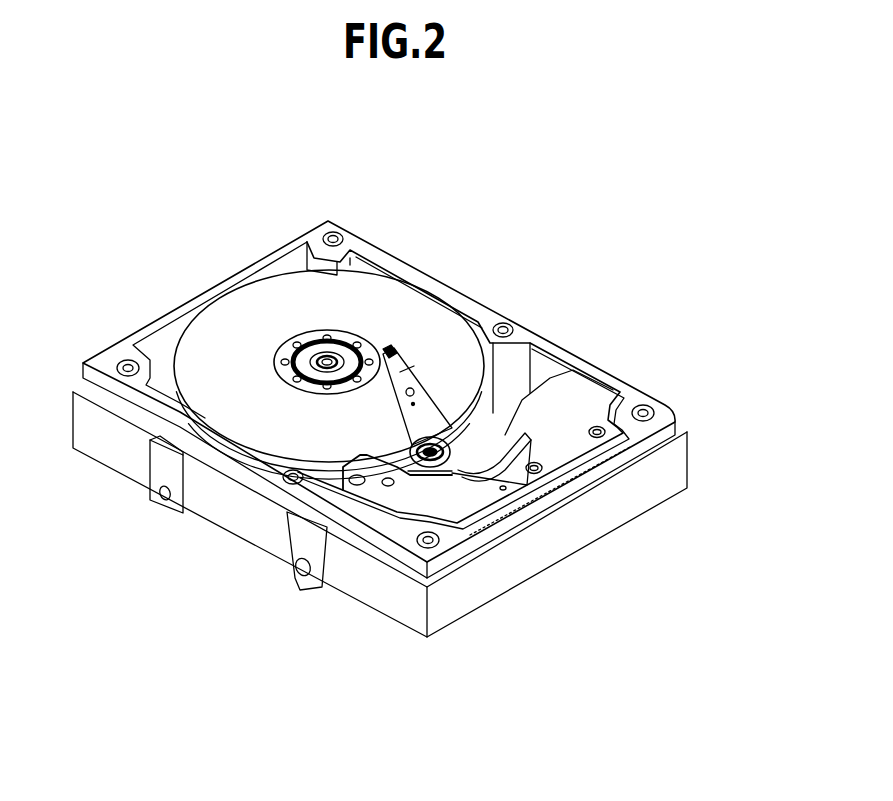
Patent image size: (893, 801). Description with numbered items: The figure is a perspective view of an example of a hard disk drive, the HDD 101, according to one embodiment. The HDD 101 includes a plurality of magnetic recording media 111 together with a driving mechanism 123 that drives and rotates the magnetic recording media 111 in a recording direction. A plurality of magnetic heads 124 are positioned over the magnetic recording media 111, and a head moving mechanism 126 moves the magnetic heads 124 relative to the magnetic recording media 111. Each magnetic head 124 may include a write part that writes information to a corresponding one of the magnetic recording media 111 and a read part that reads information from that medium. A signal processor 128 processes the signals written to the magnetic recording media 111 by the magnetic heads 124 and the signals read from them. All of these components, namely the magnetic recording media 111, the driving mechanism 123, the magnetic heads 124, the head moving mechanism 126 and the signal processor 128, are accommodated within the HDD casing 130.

The HDD 101 is at (590, 205).
The magnetic recording media 111 is at (373, 313).
The driving mechanism 123 is at (278, 346).
The magnetic heads 124 is at (387, 349).
The head moving mechanism 126 is at (463, 480).
The signal processor 128 is at (578, 410).
The HDD casing 130 is at (660, 485).